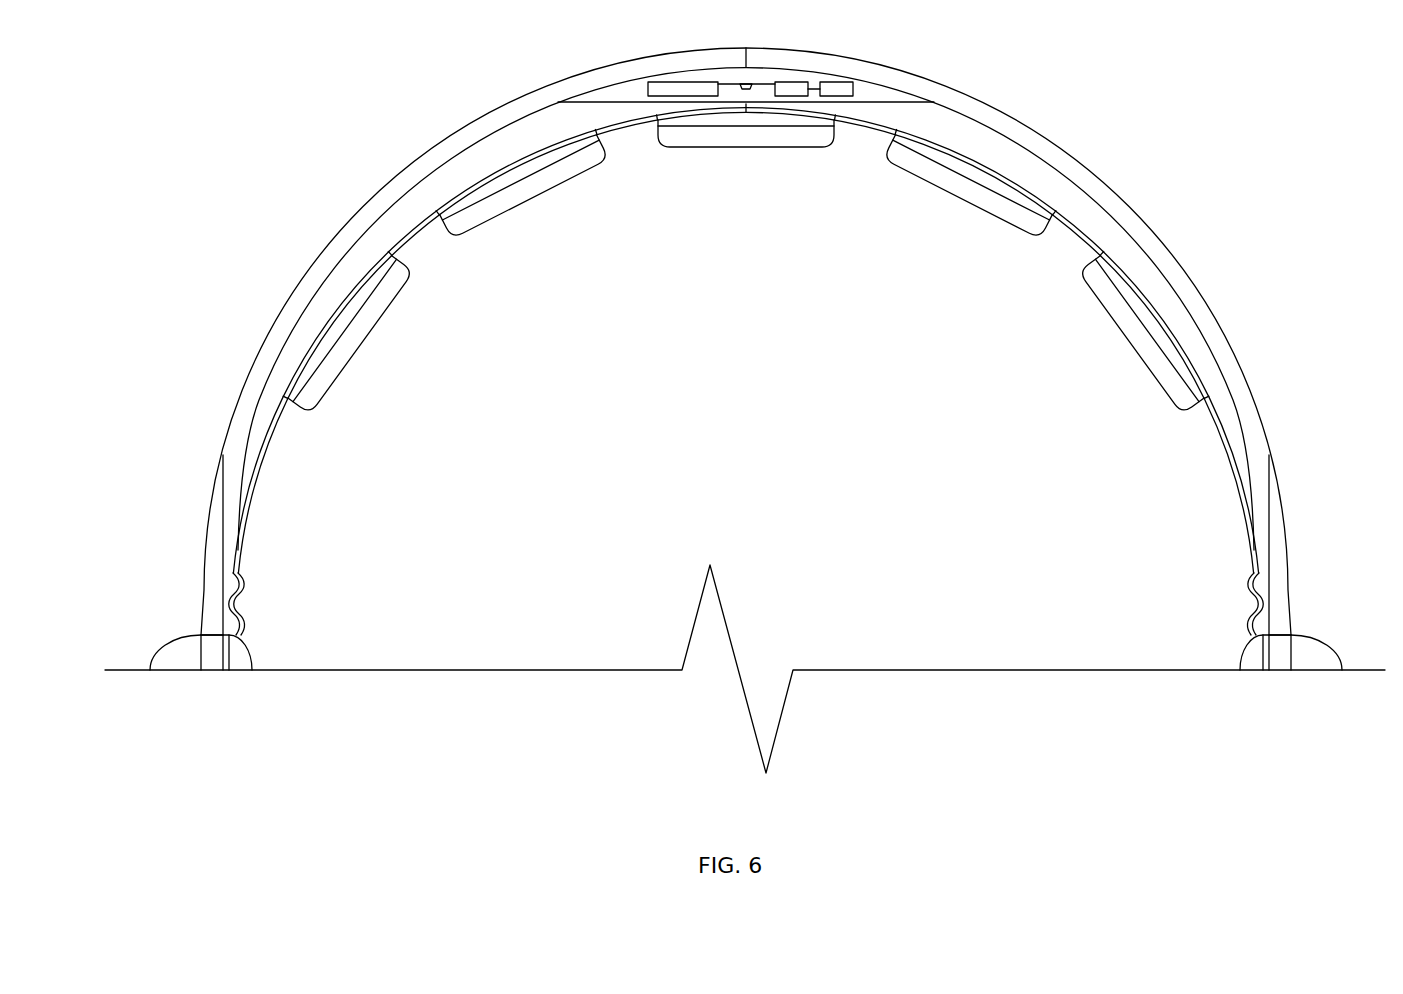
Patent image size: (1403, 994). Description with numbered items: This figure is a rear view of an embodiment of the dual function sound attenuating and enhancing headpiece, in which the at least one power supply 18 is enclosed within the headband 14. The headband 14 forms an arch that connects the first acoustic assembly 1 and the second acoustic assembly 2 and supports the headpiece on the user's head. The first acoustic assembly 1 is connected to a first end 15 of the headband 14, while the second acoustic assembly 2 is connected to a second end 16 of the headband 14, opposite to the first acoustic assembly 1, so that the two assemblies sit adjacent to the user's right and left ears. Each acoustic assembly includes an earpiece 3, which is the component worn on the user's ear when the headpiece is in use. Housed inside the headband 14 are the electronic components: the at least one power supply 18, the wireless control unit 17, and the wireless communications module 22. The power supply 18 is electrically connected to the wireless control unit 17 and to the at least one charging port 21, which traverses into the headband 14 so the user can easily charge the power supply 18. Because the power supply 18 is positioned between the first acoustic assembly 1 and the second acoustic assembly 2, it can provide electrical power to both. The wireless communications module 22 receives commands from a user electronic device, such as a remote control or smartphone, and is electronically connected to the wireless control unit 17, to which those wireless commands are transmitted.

The first acoustic assembly 1 is at (154, 652).
The second acoustic assembly 2 is at (1340, 652).
The earpiece 3 is at (245, 662).
The headband 14 is at (483, 126).
The first end 15 is at (207, 636).
The second end 16 is at (1290, 636).
The wireless control unit 17 is at (800, 88).
The power supply 18 is at (660, 86).
The charging port 21 is at (746, 83).
The wireless communications module 22 is at (848, 88).